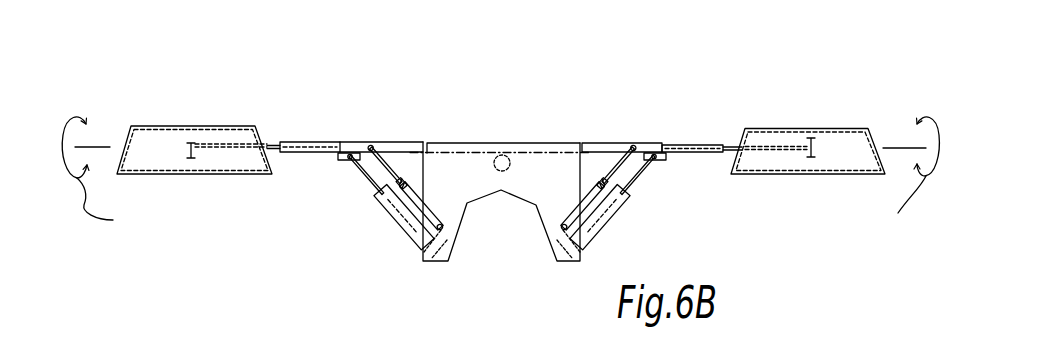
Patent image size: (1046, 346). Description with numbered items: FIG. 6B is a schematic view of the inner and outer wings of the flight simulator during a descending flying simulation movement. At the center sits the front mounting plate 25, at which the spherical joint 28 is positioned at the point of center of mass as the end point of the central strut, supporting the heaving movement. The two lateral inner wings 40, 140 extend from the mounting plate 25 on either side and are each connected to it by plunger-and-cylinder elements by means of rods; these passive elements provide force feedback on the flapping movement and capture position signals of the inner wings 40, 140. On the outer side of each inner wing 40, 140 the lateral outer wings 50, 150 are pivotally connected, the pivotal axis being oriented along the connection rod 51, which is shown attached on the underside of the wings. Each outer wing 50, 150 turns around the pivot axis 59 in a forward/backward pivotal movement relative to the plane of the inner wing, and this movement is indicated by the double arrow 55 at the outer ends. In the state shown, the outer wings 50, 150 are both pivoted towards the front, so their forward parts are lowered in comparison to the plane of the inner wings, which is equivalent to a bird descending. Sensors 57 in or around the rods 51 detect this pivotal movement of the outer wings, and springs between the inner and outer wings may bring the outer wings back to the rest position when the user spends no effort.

The front mounting plate 25 is at (452, 210).
The spherical joint 28 is at (502, 156).
The lateral inner wing 40 is at (348, 147).
The lateral inner wing 140 is at (603, 150).
The connection rod 51 is at (268, 147).
The lateral outer wing 50 is at (165, 143).
The lateral outer wing 150 is at (803, 136).
The sensors 57 is at (192, 149).
The pivot axis 59 is at (108, 147).
The double arrow 55 is at (500, 184).